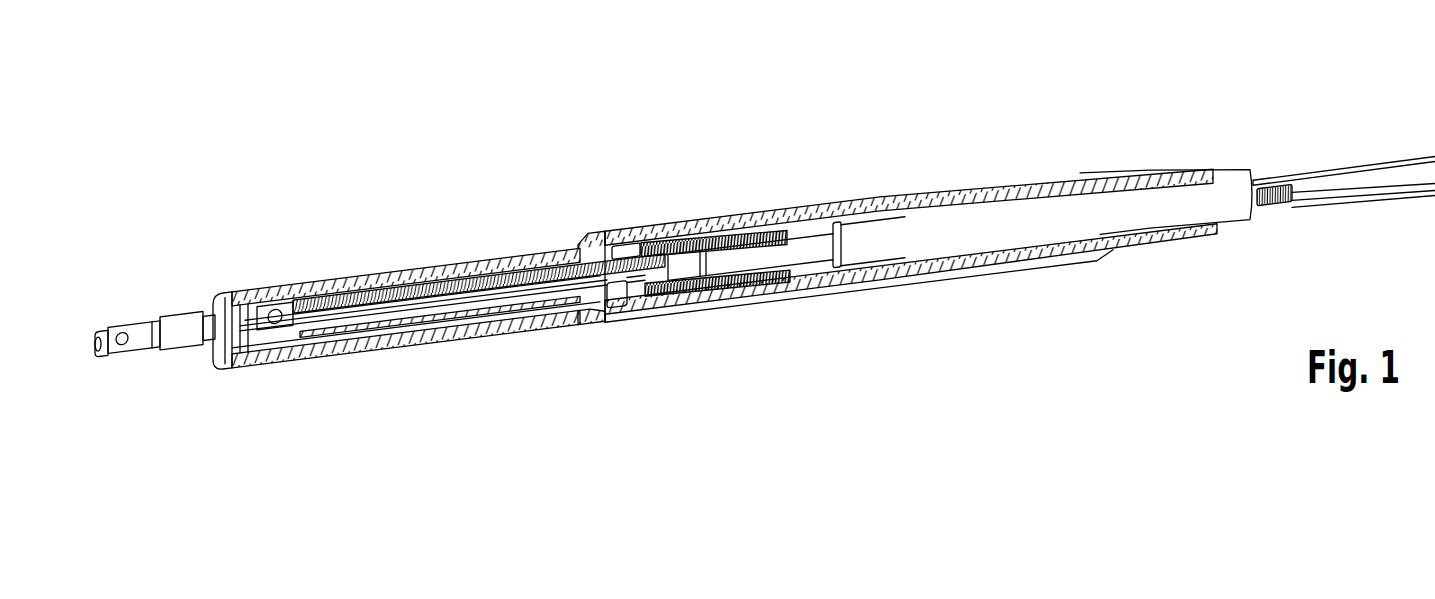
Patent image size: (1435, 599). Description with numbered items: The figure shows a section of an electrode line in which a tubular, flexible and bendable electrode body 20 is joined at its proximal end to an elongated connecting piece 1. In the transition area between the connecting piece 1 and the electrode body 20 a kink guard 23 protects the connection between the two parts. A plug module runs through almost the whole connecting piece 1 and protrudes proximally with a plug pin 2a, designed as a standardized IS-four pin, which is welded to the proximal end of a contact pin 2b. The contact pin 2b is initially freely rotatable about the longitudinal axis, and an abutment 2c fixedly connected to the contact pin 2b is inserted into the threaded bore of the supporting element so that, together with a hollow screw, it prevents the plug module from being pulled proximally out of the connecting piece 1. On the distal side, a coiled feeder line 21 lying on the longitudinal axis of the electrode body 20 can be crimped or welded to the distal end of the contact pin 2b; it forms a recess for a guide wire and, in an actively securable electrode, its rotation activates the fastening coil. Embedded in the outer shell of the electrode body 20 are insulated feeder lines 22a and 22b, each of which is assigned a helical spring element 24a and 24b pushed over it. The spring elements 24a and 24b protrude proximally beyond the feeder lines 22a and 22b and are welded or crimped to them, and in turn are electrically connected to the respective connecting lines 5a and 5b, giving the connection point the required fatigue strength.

The connecting piece 1 is at (778, 127).
The plug pin 2a is at (175, 314).
The contact pin 2b is at (372, 303).
The abutment 2c is at (274, 305).
The connecting line 5a is at (635, 292).
The connecting line 5b is at (630, 250).
The electrode body 20 is at (1422, 45).
The coiled feeder line 21 is at (1272, 197).
The feeder line 22a is at (817, 273).
The feeder line 22b is at (807, 238).
The kink guard 23 is at (920, 200).
The spring element 24a is at (725, 283).
The spring element 24b is at (717, 231).